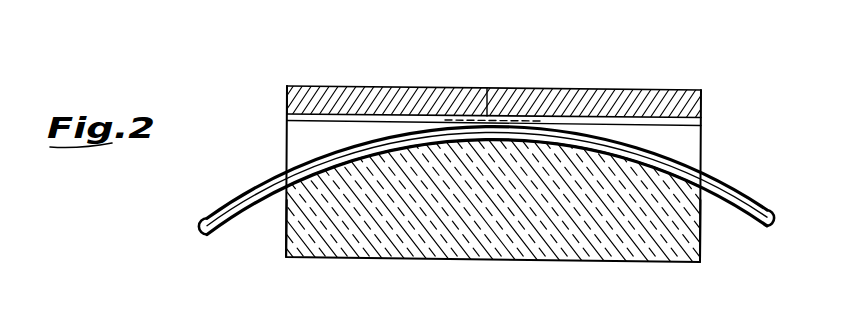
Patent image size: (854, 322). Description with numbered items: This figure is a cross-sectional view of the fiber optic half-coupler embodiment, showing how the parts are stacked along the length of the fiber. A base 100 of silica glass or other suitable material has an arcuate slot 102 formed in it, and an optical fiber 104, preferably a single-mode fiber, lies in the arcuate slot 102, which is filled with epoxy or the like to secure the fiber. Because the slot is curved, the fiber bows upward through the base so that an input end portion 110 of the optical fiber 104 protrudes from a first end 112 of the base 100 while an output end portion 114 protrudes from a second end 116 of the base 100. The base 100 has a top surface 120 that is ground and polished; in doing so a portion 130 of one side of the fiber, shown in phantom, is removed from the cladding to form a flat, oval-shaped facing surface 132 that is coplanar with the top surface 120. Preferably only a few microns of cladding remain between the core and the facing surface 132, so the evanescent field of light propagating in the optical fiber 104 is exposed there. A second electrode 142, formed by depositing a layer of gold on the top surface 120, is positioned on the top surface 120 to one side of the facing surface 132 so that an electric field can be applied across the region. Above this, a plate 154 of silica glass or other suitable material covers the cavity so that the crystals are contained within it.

The base 100 is at (582, 243).
The arcuate slot 102 is at (320, 158).
The optical fiber 104 is at (252, 190).
The input end portion 110 is at (207, 221).
The first end 112 is at (287, 243).
The output end portion 114 is at (747, 198).
The second end 116 is at (700, 244).
The top surface 120 is at (701, 117).
The removed portion 130 is at (527, 116).
The facing surface 132 is at (486, 89).
The second electrode 142 is at (328, 113).
The plate 154 is at (388, 89).